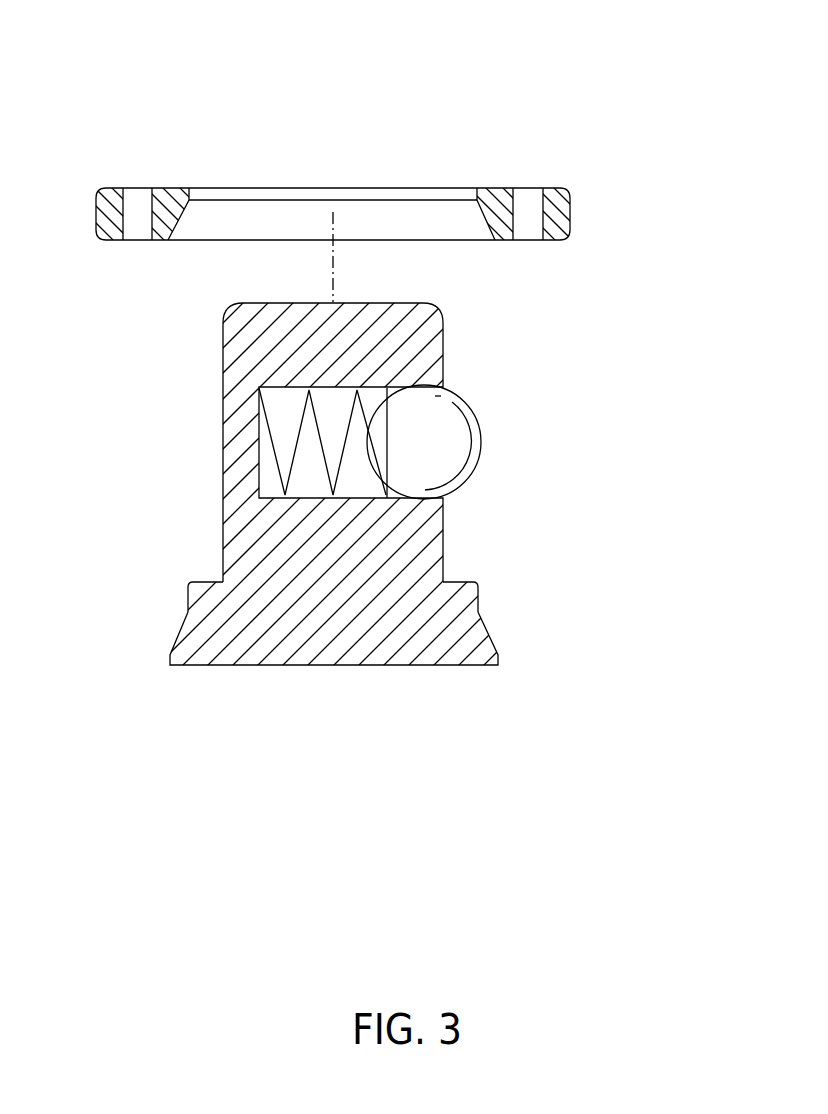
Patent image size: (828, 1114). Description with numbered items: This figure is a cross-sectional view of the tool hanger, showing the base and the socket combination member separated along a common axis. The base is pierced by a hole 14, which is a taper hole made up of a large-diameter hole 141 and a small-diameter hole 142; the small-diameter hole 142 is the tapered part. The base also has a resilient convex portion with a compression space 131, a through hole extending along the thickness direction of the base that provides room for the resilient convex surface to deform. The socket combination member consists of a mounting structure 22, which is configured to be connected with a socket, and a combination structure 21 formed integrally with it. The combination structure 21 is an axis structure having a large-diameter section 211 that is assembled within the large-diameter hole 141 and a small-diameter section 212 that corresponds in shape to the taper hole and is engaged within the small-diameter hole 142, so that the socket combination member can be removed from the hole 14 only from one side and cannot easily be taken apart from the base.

The hole 14 is at (343, 134).
The large-diameter hole 141 is at (487, 220).
The small-diameter hole 142 is at (358, 66).
The compression space 131 is at (140, 203).
The mounting structure 22 is at (443, 348).
The combination structure 21 is at (414, 490).
The small-diameter section 212 is at (478, 597).
The large-diameter section 211 is at (391, 638).